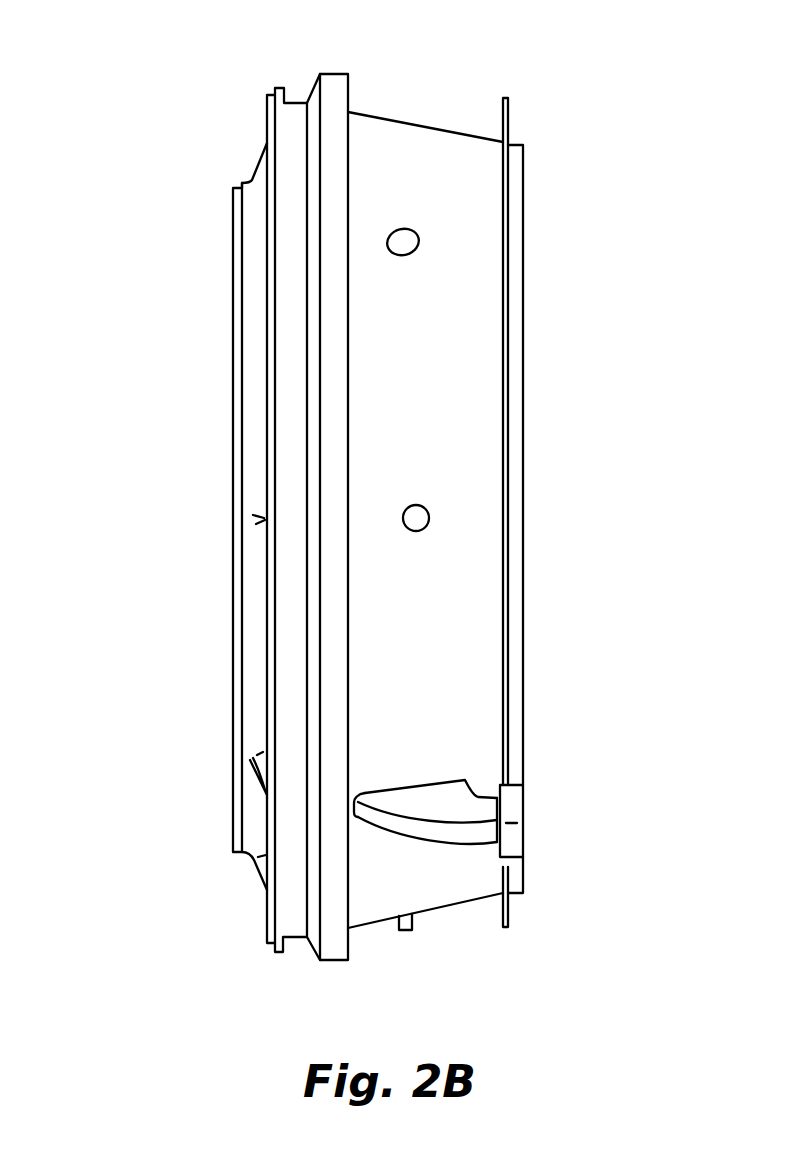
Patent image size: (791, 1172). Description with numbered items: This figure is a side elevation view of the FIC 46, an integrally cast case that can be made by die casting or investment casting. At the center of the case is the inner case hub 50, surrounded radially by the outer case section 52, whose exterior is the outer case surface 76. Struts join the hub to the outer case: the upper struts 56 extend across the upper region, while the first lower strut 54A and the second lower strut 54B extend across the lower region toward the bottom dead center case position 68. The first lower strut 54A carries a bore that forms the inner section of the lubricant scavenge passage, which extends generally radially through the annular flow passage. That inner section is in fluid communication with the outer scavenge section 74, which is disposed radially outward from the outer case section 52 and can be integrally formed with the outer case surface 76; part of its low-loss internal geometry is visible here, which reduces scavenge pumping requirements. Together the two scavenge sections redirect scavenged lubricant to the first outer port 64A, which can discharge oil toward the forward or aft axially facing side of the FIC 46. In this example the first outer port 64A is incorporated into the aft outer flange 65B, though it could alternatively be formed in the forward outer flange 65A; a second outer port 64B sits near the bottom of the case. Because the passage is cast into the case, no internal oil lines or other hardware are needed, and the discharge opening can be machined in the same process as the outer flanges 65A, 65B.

The FIC 46 is at (147, 124).
The inner case hub 50 is at (205, 247).
The outer case section 52 is at (397, 103).
The first lower strut 54A is at (258, 783).
The second lower strut 54B is at (260, 880).
The upper struts 56 is at (259, 512).
The first outer port 64A is at (548, 842).
The second outer port 64B is at (407, 933).
The forward outer flange 65A is at (333, 72).
The aft outer flange 65B is at (507, 98).
The bottom dead center (BDC) case position 68 is at (371, 947).
The outer scavenge section 74 is at (401, 777).
The outer case surface 76 is at (430, 357).